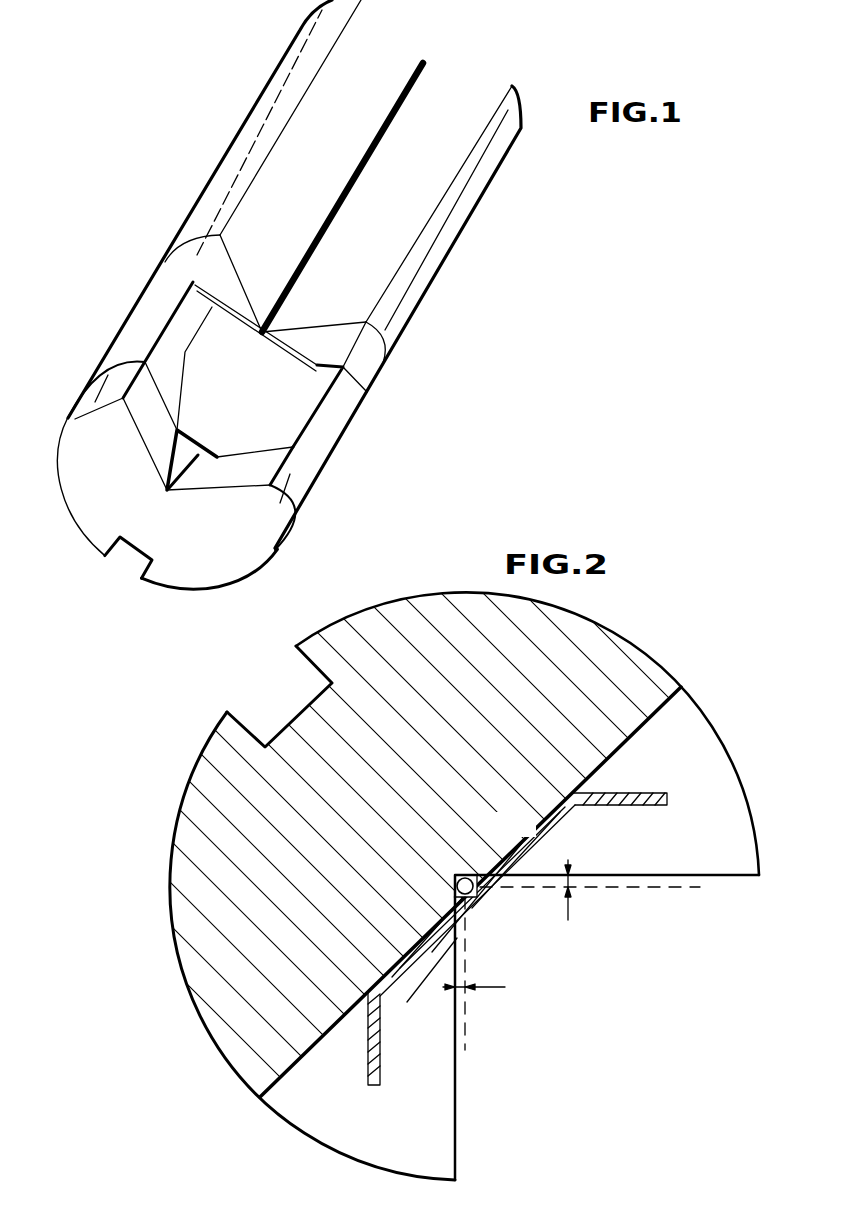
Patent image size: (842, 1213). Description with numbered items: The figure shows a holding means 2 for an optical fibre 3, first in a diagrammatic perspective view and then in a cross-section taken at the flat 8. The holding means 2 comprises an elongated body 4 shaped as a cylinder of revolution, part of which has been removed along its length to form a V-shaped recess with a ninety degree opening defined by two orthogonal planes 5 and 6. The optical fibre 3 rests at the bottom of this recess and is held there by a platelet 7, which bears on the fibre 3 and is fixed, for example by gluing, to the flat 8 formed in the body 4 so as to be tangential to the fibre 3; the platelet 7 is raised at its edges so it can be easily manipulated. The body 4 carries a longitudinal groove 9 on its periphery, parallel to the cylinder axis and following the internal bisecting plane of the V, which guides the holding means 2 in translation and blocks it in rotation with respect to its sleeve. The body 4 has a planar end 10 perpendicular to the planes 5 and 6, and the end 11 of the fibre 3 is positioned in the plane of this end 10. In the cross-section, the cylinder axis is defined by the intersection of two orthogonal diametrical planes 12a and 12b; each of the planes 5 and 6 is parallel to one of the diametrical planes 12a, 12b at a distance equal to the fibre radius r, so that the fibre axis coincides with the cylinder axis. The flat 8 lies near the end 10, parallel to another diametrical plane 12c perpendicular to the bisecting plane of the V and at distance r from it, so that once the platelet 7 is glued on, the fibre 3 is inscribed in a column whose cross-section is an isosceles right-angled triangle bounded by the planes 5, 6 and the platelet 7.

In FIG. 1, the holding means 2 is at (150, 203).
In FIG. 2, the holding means 2 is at (130, 869).
In FIG. 1, the optical fibre 3 is at (425, 65).
In FIG. 2, the optical fibre 3 is at (470, 897).
In FIG. 1, the elongated body 4 is at (243, 123).
In FIG. 2, the elongated body 4 is at (207, 1033).
In FIG. 1, the orthogonal plane 5 is at (512, 86).
In FIG. 2, the orthogonal plane 5 is at (745, 878).
In FIG. 1, the orthogonal plane 6 is at (475, 102).
In FIG. 2, the orthogonal plane 6 is at (460, 1137).
In FIG. 1, the platelet 7 is at (230, 398).
In FIG. 2, the platelet 7 is at (668, 799).
In FIG. 1, the flat 8 is at (330, 438).
In FIG. 2, the flat 8 is at (292, 1078).
In FIG. 1, the longitudinal groove 9 is at (130, 552).
In FIG. 2, the longitudinal groove 9 is at (282, 695).
In FIG. 1, the planar end 10 is at (195, 570).
In FIG. 1, the end of fibre 11 is at (168, 493).
In FIG. 2, the diametrical plane 12a is at (626, 892).
In FIG. 2, the diametrical plane 12b is at (466, 1033).
In FIG. 2, the diametrical plane 12c is at (522, 852).